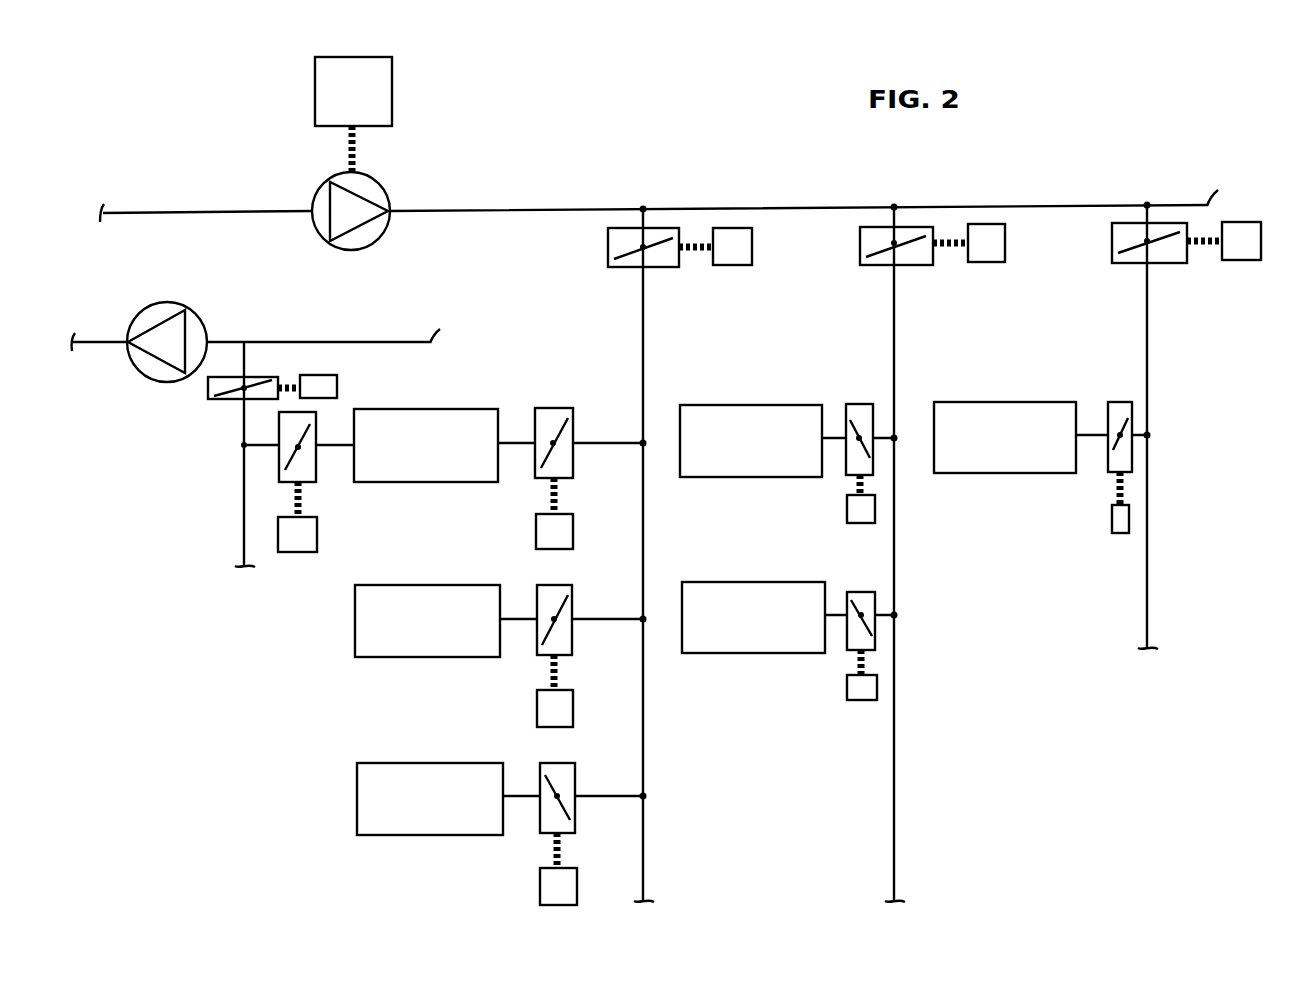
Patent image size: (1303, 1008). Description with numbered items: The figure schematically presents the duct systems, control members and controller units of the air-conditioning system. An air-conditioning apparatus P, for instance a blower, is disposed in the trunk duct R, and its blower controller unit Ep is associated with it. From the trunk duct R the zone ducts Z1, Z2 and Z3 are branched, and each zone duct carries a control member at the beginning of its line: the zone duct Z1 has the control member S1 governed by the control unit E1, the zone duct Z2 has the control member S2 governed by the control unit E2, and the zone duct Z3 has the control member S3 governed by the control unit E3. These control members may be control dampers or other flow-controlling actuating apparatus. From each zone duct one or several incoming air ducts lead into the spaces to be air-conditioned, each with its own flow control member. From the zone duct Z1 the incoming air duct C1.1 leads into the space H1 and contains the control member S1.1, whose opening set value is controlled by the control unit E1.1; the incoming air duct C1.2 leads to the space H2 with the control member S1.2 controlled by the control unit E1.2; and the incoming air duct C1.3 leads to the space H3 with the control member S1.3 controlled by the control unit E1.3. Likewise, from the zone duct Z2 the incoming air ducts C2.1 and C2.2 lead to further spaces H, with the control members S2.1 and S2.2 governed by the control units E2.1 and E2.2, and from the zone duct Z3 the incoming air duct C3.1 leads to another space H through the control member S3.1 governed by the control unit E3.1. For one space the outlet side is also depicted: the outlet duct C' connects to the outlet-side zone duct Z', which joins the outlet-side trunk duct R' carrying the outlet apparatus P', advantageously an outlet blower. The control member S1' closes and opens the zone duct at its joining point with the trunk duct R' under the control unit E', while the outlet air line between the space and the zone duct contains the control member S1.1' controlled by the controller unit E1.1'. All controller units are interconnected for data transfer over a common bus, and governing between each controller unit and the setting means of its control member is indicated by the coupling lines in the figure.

The trunk duct R is at (659, 179).
The blower controller unit Ep is at (353, 114).
The air-conditioning apparatus P is at (351, 211).
The outlet-side air-conditioning apparatus P' is at (167, 311).
The outlet-side trunk duct R' is at (256, 313).
The outlet-side zone duct Z' is at (259, 454).
The outlet zone control unit E' is at (330, 370).
The outlet zone control member S1' is at (215, 403).
The outlet duct C' is at (235, 434).
The outlet air line control member S1.1' is at (270, 454).
The outlet air line controller unit E1.1' is at (337, 518).
The space to be air-conditioned H1 is at (426, 445).
The control member S1.1 is at (574, 452).
The incoming air duct C1.1 is at (592, 443).
The control unit E1.1 is at (527, 514).
The space to be air-conditioned H2 is at (427, 621).
The control member S1.2 is at (572, 640).
The incoming air duct C1.2 is at (594, 619).
The control unit E1.2 is at (537, 706).
The space to be air-conditioned H3 is at (430, 799).
The control member S1.3 is at (575, 818).
The incoming air duct C1.3 is at (596, 796).
The control unit E1.3 is at (540, 884).
The zone duct Z1 is at (643, 308).
The control member S1 is at (611, 249).
The control unit E1 is at (738, 265).
The zone duct Z2 is at (894, 301).
The control member S2 is at (860, 238).
The control unit E2 is at (990, 262).
The space to be air-conditioned H is at (878, 527).
The control member S2.1 is at (858, 402).
The incoming air duct C2.1 is at (832, 443).
The control unit E2.1 is at (855, 512).
The control member S2.2 is at (858, 594).
The incoming air duct C2.2 is at (840, 618).
The control unit E2.2 is at (853, 697).
The zone duct Z3 is at (1147, 311).
The control member S3 is at (1112, 236).
The control unit E3 is at (1240, 260).
The control member S3.1 is at (1116, 402).
The incoming air duct C3.1 is at (1095, 440).
The control unit E3.1 is at (1118, 520).